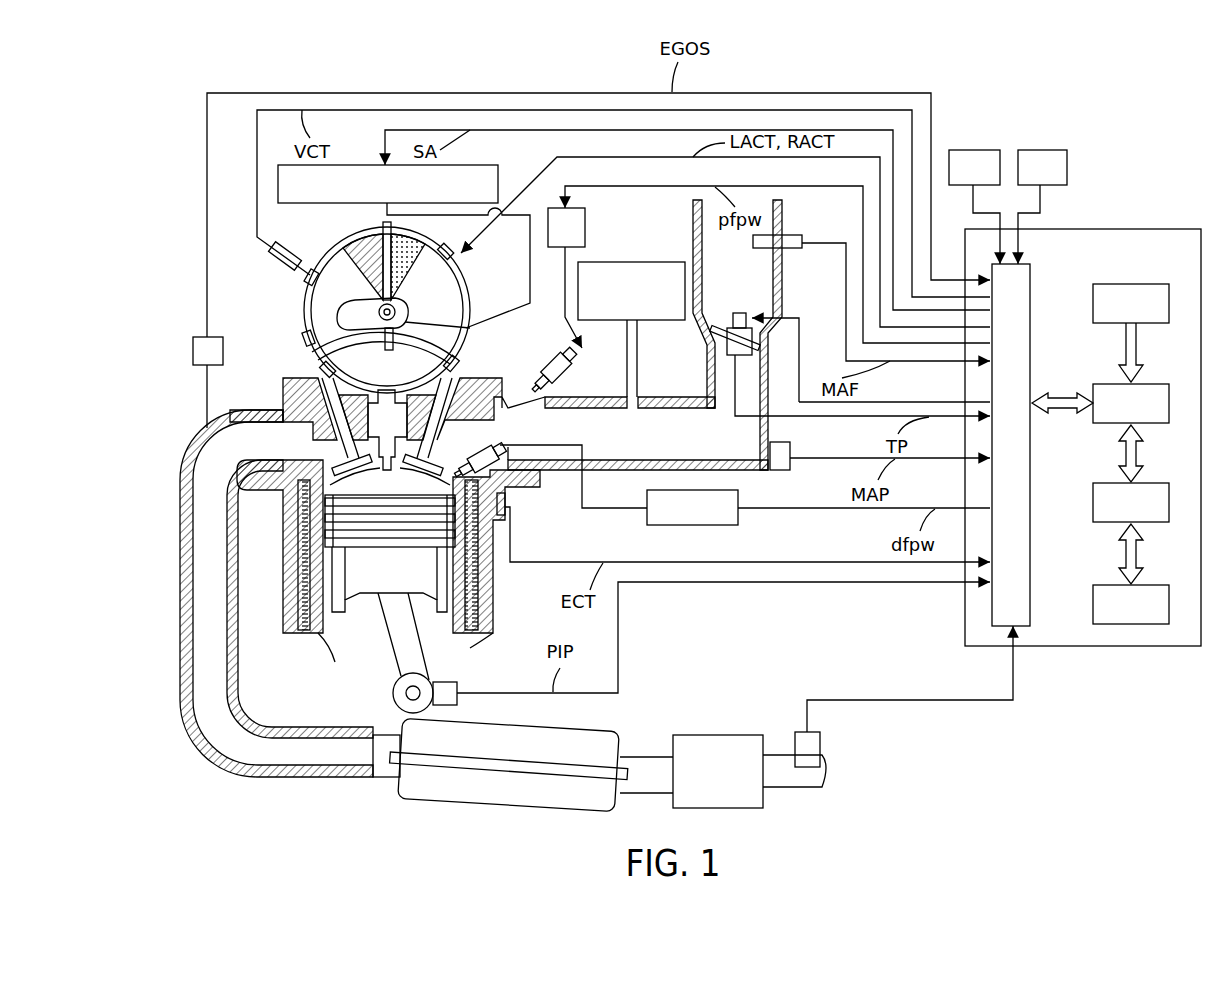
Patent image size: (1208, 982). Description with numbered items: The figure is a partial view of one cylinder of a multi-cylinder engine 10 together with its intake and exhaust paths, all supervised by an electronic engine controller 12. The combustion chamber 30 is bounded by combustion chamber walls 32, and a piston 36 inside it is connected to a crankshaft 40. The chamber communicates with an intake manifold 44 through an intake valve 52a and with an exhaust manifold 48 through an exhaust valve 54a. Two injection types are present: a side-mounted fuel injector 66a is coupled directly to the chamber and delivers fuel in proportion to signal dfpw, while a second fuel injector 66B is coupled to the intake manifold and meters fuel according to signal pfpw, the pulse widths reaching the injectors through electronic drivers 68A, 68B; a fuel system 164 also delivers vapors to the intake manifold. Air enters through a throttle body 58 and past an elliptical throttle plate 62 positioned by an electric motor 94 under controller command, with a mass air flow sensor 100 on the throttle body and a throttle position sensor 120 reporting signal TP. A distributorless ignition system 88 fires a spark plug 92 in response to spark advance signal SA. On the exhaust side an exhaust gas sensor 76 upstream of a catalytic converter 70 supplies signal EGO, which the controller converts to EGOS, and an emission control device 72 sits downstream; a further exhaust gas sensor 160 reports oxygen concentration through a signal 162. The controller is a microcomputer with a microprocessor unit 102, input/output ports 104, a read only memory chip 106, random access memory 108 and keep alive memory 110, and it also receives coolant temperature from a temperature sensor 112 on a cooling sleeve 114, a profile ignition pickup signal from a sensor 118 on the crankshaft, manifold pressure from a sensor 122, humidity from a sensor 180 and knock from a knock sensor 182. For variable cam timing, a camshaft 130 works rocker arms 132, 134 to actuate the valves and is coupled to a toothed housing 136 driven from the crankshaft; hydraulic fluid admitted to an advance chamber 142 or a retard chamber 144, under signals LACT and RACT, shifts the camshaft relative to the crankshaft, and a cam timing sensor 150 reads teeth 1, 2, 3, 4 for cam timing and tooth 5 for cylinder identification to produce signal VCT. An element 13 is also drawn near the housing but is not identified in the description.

The tooth 1 is at (382, 228).
The tooth 2 is at (468, 280).
The tooth 3 is at (406, 402).
The tooth 4 is at (305, 340).
The tooth 5 is at (307, 283).
The engine 10 is at (530, 317).
The electronic engine controller 12 is at (1145, 229).
The valve position sensor 13 is at (468, 262).
The combustion chamber 30 is at (320, 515).
The combustion chamber walls 32 is at (405, 658).
The piston 36 is at (374, 593).
The crankshaft 40 is at (395, 698).
The intake manifold 44 is at (635, 433).
The exhaust manifold 48 is at (180, 510).
The intake valve 52a is at (437, 458).
The exhaust valve 54a is at (343, 462).
The throttle body 58 is at (705, 380).
The throttle plate 62 is at (716, 332).
The fuel injector 66a is at (505, 447).
The fuel injector 66B is at (540, 360).
The electronic driver 68A is at (740, 503).
The electronic driver 68B is at (769, 267).
The catalytic converter 70 is at (608, 728).
The emission control device 72 is at (712, 735).
The exhaust gas sensor 76 is at (200, 337).
The distributorless ignition system 88 is at (502, 176).
The spark plug 92 is at (384, 403).
The electric motor 94 is at (742, 313).
The mass air flow sensor 100 is at (785, 235).
The microprocessor unit 102 is at (1160, 384).
The input/output ports 104 is at (1032, 290).
The read only memory chip 106 is at (1150, 284).
The random access memory 108 is at (1160, 483).
The keep alive memory 110 is at (1160, 585).
The temperature sensor 112 is at (510, 500).
The cooling sleeve 114 is at (478, 595).
The profile ignition pickup sensor 118 is at (458, 688).
The throttle position sensor 120 is at (727, 345).
The manifold pressure sensor 122 is at (792, 448).
The camshaft 130 is at (358, 305).
The rocker arm 132 is at (318, 372).
The rocker arm 134 is at (460, 362).
The housing 136 is at (304, 322).
The advance chamber 142 is at (418, 252).
The retard chamber 144 is at (352, 262).
The cam timing sensor 150 is at (280, 267).
The exhaust gas sensor 160 is at (820, 740).
The signal 162 is at (970, 701).
The fuel system 164 is at (648, 262).
The ambient humidity sensor 180 is at (974, 207).
The knock sensor 182 is at (1042, 207).